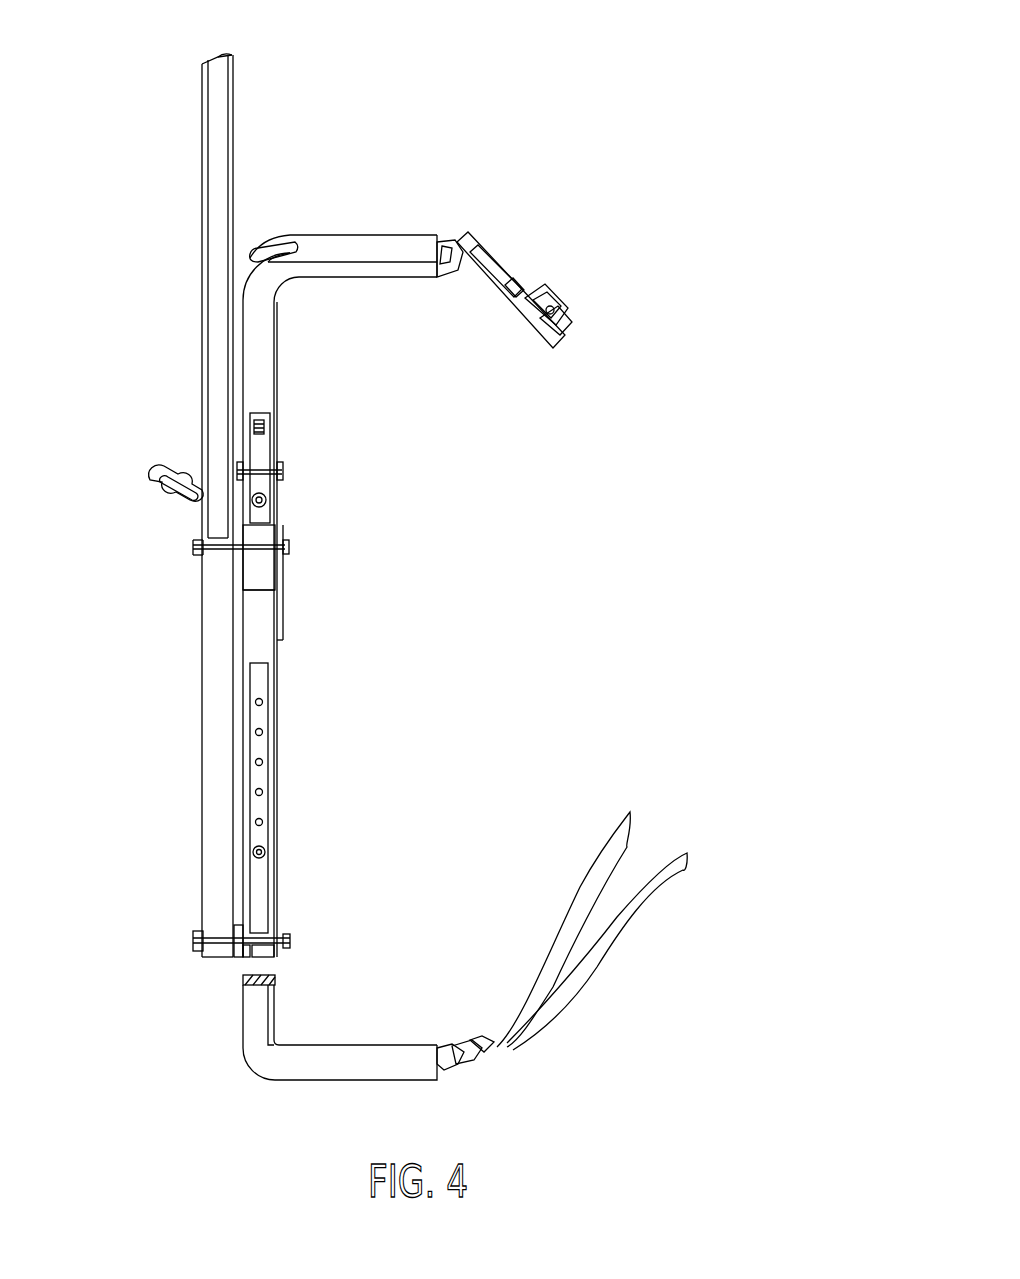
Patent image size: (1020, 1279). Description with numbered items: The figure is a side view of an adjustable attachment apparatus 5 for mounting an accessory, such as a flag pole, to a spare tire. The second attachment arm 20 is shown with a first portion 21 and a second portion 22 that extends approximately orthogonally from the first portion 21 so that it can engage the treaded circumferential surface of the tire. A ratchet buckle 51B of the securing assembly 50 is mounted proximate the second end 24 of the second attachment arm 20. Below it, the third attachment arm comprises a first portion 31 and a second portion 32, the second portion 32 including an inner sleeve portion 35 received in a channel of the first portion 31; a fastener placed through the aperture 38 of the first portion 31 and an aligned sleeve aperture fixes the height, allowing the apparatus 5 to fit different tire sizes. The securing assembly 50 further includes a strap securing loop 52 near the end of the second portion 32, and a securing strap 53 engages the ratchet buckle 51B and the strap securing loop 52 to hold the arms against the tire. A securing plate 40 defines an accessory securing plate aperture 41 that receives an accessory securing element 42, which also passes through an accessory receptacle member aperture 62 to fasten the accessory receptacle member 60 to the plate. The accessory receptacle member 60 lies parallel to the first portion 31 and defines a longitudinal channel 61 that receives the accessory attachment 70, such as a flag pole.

The adjustable attachment apparatus 5 is at (457, 553).
The second attachment arm 20 is at (473, 626).
The first portion of second attachment arm 21 is at (304, 605).
The second portion of second attachment arm 22 is at (343, 213).
The second end of second attachment arm 24 is at (440, 213).
The first portion of third attachment arm 31 is at (310, 798).
The second portion of third attachment arm 32 is at (340, 1011).
The inner sleeve portion 35 is at (260, 745).
The aperture of first portion 38 is at (291, 910).
The securing plate 40 is at (254, 529).
The accessory securing plate aperture 41 is at (334, 582).
The accessory securing element 42 is at (232, 546).
The securing assembly 50 is at (570, 309).
The ratchet buckle 51B is at (604, 335).
The strap securing loop 52 is at (443, 1073).
The securing strap 53 is at (598, 943).
The accessory receptacle member 60 is at (145, 481).
The channel 61 is at (196, 56).
The accessory receptacle member aperture 62 is at (141, 510).
The accessory attachment 70 is at (156, 506).